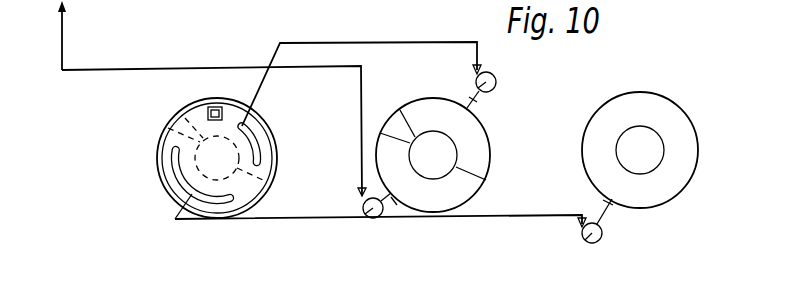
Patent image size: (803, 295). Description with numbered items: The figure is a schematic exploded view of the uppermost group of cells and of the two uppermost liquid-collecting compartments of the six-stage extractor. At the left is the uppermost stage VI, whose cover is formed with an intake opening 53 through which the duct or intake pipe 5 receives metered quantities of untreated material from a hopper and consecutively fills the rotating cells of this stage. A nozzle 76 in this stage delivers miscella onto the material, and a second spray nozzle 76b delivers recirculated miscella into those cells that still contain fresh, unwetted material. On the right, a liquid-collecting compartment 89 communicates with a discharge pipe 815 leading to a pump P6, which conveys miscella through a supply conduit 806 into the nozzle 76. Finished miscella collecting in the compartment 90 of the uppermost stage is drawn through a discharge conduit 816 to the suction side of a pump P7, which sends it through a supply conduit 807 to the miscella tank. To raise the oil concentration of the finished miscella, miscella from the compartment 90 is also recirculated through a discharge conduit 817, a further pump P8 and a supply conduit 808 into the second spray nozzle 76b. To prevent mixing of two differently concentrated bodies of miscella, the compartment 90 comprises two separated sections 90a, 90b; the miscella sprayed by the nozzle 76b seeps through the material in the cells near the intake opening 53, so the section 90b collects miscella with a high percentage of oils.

The duct or intake pipe 5 is at (208, 107).
The uppermost stage VI is at (150, 166).
The intake opening 53 is at (216, 107).
The nozzle 76 is at (190, 196).
The second spray nozzle 76b is at (248, 130).
The supply conduit 807 is at (330, 67).
The supply conduit 808 is at (355, 43).
The supply conduit 806 is at (530, 216).
The compartment 90 is at (489, 151).
The compartment section 90a is at (489, 168).
The compartment section 90b is at (465, 192).
The pump P8 is at (497, 82).
The discharge conduit 817 is at (475, 99).
The pump P7 is at (373, 218).
The discharge conduit 816 is at (397, 203).
The liquid-collecting compartment 89 is at (650, 93).
The pump P6 is at (592, 243).
The discharge pipe 815 is at (606, 206).